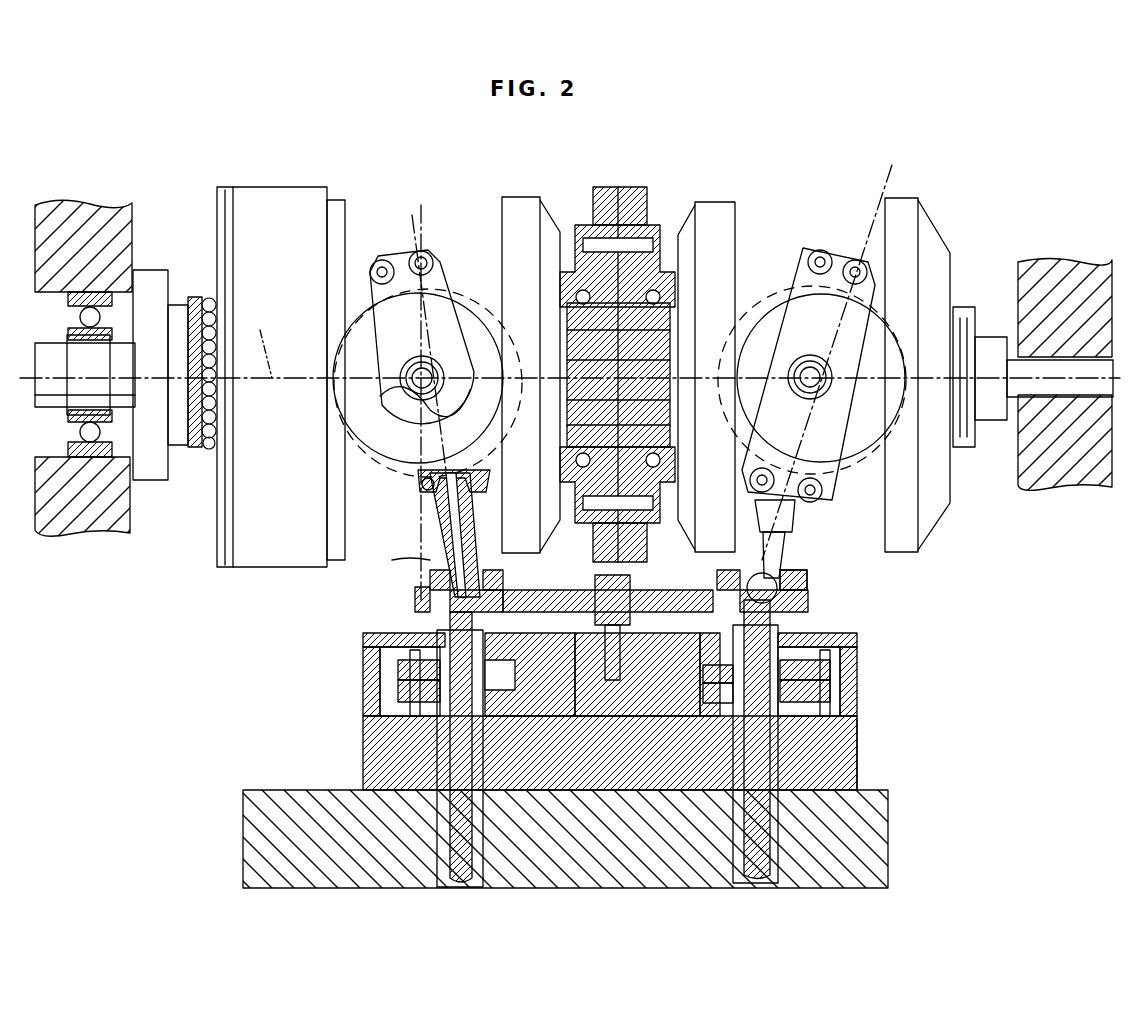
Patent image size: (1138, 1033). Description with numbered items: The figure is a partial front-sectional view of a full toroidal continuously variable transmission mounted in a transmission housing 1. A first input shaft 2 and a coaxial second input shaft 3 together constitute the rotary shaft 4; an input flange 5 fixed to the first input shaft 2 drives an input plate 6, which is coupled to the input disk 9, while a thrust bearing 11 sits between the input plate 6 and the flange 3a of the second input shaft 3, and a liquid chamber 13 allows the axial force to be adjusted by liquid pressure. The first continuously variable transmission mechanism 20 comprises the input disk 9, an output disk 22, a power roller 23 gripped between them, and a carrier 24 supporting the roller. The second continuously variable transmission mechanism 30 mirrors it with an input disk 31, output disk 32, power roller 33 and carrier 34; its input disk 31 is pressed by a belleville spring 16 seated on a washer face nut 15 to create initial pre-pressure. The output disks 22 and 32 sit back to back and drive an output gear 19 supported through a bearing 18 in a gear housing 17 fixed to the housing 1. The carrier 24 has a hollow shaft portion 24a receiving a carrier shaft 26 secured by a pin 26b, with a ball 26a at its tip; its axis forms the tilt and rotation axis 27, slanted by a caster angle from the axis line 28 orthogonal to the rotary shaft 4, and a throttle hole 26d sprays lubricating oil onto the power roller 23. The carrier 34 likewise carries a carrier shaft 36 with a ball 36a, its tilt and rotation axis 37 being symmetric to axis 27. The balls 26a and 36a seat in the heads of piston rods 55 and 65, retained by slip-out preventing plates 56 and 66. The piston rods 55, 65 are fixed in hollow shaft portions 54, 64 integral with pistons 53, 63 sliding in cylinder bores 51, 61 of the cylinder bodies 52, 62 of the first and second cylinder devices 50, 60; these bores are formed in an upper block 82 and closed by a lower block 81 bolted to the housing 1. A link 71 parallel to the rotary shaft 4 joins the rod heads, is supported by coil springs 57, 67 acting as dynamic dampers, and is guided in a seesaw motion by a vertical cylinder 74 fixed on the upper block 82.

The transmission housing 1 is at (112, 203).
The first input shaft 2 is at (78, 362).
The second input shaft 3 is at (580, 350).
The flange 3a is at (178, 445).
The rotary shaft 4 is at (268, 360).
The input flange 5 is at (150, 278).
The input plate 6 is at (228, 190).
The input disk 9 is at (336, 202).
The thrust bearing 11 is at (205, 298).
The liquid chamber 13 is at (285, 350).
The washer face nut 15 is at (990, 337).
The belleville spring 16 is at (960, 305).
The gear housing 17 is at (630, 190).
The bearing 18 is at (570, 240).
The output gear 19 is at (640, 245).
The first continuously variable transmission mechanism 20 is at (427, 352).
The output disk 22 is at (518, 210).
The power roller 23 is at (468, 300).
The carrier 24 is at (372, 300).
The hollow shaft portion 24a is at (440, 480).
The carrier shaft 26 is at (385, 526).
The ball 26a is at (415, 598).
The pin 26b is at (425, 486).
The throttle hole 26d is at (445, 470).
The tilt and rotation axis 27 is at (384, 262).
The axis line 28 is at (425, 252).
The second continuously variable transmission mechanism 30 is at (812, 327).
The input disk 31 is at (905, 205).
The output disk 32 is at (720, 212).
The power roller 33 is at (758, 300).
The carrier 34 is at (823, 250).
The carrier shaft 36 is at (806, 551).
The ball 36a is at (778, 584).
The tilt and rotation axis 37 is at (828, 170).
The first cylinder device 50 is at (464, 680).
The cylinder bore 51 is at (408, 672).
The cylinder body 52 is at (398, 690).
The piston 53 is at (415, 705).
The hollow shaft portion 54 is at (624, 674).
The piston rod 55 is at (484, 758).
The slip-out preventing plate 56 is at (430, 578).
The coil spring 57 is at (510, 640).
The second cylinder device 60 is at (799, 740).
The cylinder bore 61 is at (830, 676).
The cylinder body 62 is at (857, 660).
The piston 63 is at (790, 700).
The hollow shaft portion 64 is at (718, 680).
The piston rod 65 is at (610, 753).
The slip-out preventing plate 66 is at (807, 584).
The coil spring 67 is at (720, 640).
The link 71 is at (662, 592).
The vertical cylinder 74 is at (596, 590).
The lower block 81 is at (857, 776).
The upper block 82 is at (857, 700).